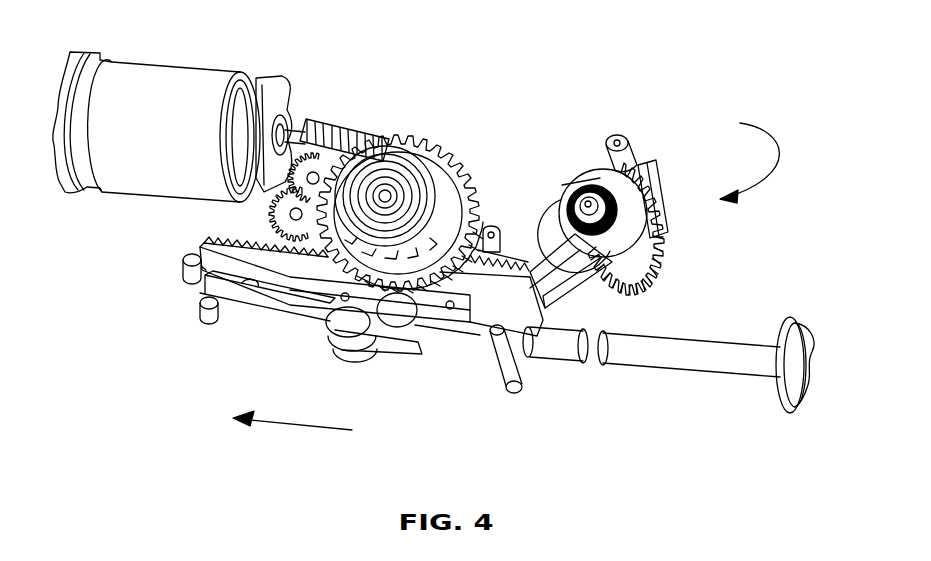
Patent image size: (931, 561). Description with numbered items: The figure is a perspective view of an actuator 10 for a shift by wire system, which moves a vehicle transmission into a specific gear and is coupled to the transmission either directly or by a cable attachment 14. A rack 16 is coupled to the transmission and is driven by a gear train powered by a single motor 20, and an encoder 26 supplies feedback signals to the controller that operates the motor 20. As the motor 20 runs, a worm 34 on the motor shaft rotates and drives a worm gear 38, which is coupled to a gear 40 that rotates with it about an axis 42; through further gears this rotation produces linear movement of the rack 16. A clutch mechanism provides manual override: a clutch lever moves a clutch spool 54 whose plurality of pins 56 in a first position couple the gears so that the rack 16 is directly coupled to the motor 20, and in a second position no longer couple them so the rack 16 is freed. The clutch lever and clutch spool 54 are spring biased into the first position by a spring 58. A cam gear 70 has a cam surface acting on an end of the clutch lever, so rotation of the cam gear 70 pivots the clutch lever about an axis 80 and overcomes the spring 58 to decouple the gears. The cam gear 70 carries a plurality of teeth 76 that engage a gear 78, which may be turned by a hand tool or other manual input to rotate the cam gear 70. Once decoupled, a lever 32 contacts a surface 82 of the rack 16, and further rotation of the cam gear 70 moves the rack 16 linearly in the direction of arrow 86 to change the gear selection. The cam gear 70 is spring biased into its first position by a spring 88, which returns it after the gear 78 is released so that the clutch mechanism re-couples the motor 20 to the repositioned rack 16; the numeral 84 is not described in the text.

The actuator 10 is at (680, 98).
The cable attachment 14 is at (668, 384).
The rack 16 is at (490, 290).
The motor 20 is at (170, 87).
The encoder 26 is at (287, 107).
The lever 32 is at (570, 293).
The worm 34 is at (350, 128).
The worm gear 38 is at (297, 213).
The gear 40 is at (270, 174).
The axis 42 is at (313, 133).
The clutch spool 54 is at (357, 240).
The pins 56 is at (440, 197).
The spring 58 is at (393, 160).
The cam gear 70 is at (655, 195).
The teeth 76 is at (663, 247).
The gear 78 is at (632, 165).
The axis 80 is at (490, 228).
The surface 82 is at (547, 330).
The rotation direction arrow 84 is at (780, 155).
The arrow 86 is at (296, 423).
The spring 88 is at (597, 183).